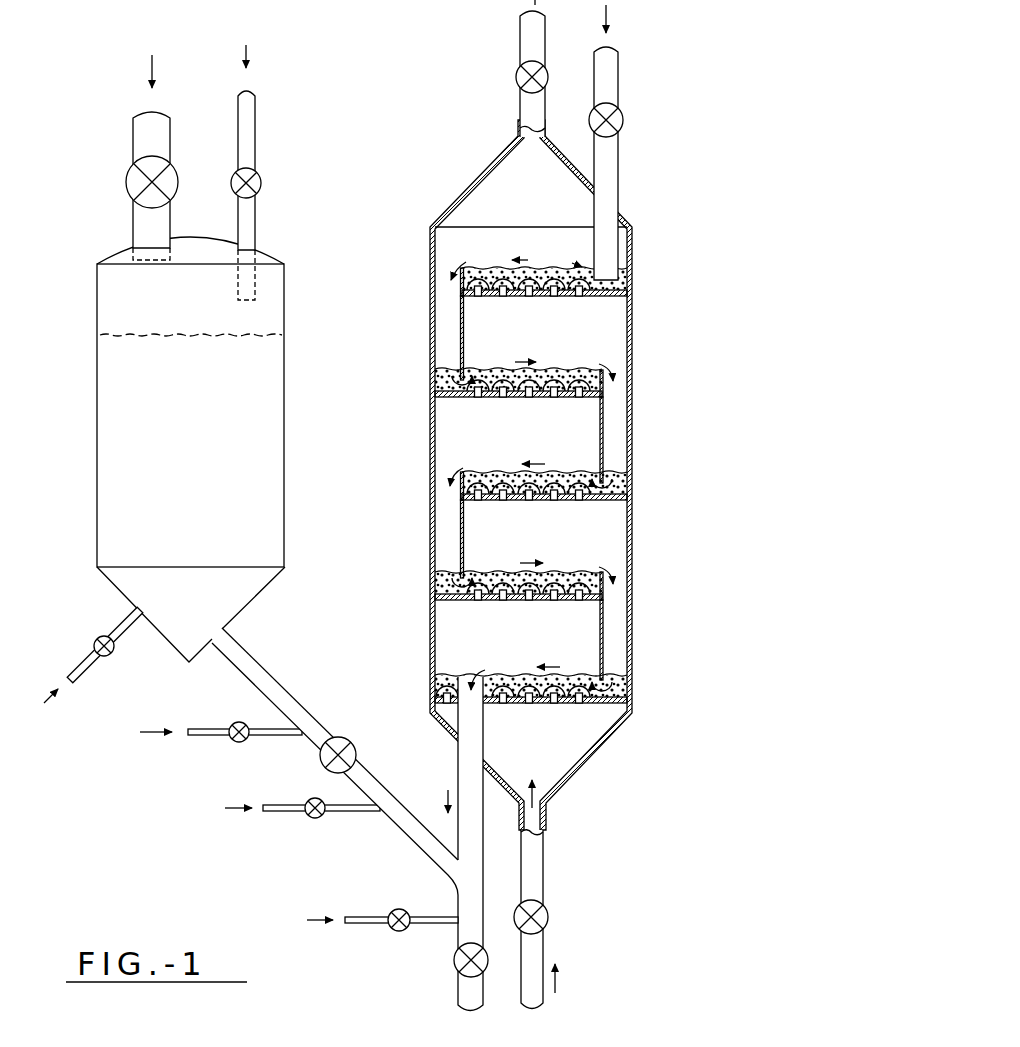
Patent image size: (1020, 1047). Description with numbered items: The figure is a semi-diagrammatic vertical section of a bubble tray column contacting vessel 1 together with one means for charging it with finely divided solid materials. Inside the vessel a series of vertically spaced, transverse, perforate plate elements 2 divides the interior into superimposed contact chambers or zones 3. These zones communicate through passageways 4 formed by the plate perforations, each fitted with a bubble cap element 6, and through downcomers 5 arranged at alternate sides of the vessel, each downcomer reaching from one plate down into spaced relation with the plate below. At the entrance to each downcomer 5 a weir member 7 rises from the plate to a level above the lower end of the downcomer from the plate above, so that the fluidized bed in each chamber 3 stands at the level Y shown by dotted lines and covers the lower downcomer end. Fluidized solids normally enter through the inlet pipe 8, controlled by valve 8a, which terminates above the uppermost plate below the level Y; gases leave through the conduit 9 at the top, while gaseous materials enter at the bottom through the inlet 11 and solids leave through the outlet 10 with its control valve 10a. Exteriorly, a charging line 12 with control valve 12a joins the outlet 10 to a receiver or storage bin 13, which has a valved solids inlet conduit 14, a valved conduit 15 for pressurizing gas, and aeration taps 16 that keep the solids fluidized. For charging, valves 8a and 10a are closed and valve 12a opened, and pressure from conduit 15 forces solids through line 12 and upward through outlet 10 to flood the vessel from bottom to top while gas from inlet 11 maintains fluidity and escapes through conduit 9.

The bubble tray column contacting vessel 1 is at (632, 525).
The perforate plate element 2 is at (559, 294).
The chamber 3 is at (513, 464).
The passageway 4 is at (532, 297).
The downcomer 5 is at (463, 332).
The bubble cap element 6 is at (581, 554).
The weir member 7 is at (460, 287).
The inlet pipe 8 is at (618, 168).
The valve 8a is at (623, 118).
The conduit 9 is at (520, 35).
The outlet 10 is at (458, 768).
The control valve 10a is at (455, 966).
The inlet 11 is at (543, 878).
The charging line 12 is at (277, 685).
The control valve 12a is at (354, 750).
The receiver or storage bin 13 is at (97, 425).
The valved solids inlet conduit 14 is at (133, 138).
The valved conduit 15 is at (256, 138).
The aeration tap 16 is at (96, 656).
The fluidized level Y is at (545, 266).